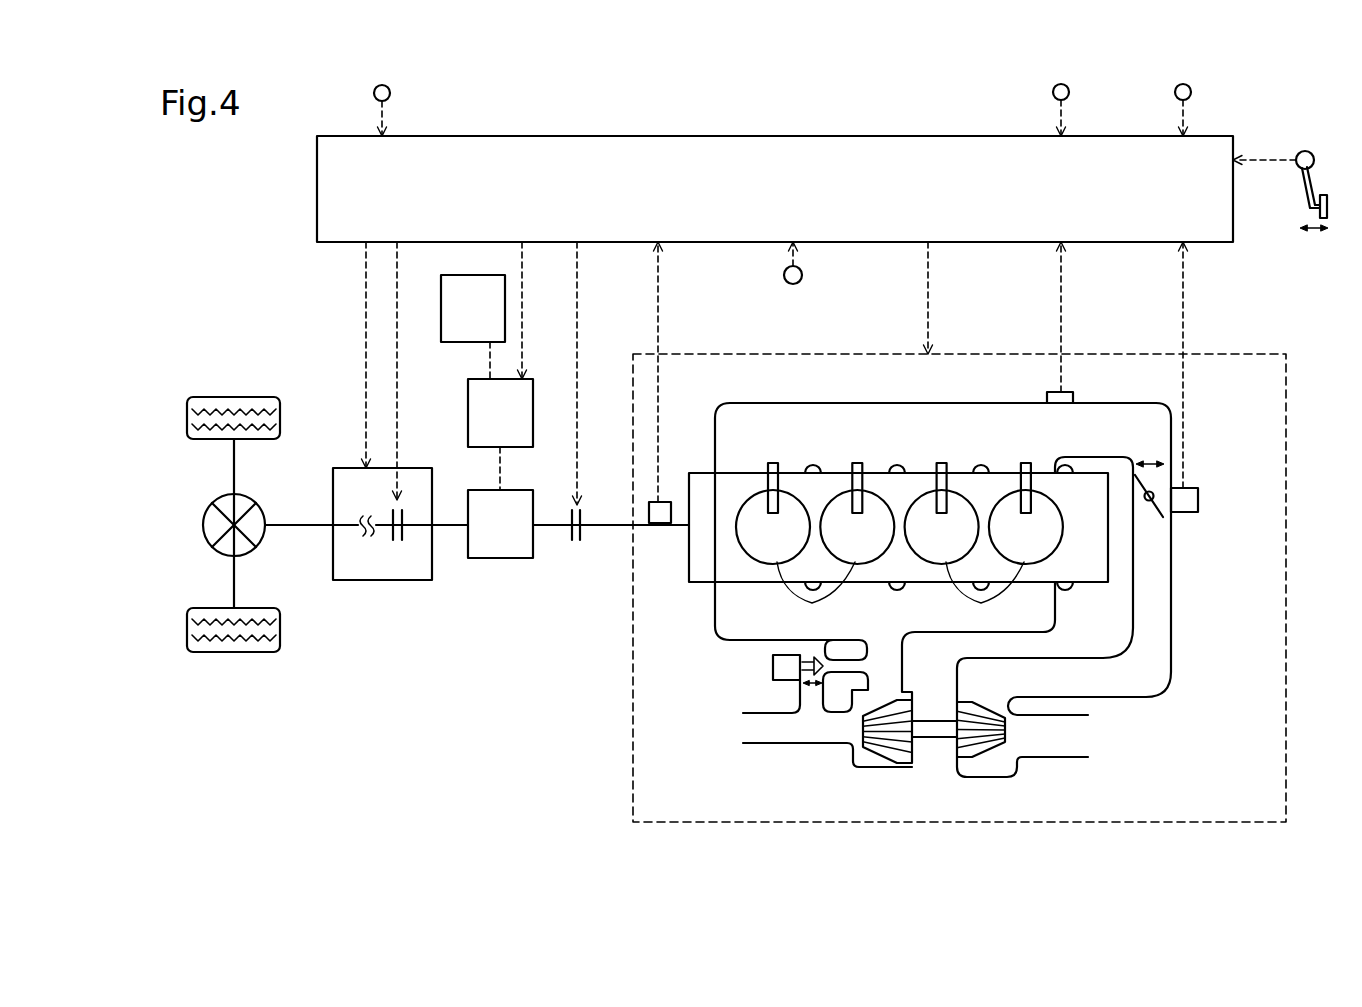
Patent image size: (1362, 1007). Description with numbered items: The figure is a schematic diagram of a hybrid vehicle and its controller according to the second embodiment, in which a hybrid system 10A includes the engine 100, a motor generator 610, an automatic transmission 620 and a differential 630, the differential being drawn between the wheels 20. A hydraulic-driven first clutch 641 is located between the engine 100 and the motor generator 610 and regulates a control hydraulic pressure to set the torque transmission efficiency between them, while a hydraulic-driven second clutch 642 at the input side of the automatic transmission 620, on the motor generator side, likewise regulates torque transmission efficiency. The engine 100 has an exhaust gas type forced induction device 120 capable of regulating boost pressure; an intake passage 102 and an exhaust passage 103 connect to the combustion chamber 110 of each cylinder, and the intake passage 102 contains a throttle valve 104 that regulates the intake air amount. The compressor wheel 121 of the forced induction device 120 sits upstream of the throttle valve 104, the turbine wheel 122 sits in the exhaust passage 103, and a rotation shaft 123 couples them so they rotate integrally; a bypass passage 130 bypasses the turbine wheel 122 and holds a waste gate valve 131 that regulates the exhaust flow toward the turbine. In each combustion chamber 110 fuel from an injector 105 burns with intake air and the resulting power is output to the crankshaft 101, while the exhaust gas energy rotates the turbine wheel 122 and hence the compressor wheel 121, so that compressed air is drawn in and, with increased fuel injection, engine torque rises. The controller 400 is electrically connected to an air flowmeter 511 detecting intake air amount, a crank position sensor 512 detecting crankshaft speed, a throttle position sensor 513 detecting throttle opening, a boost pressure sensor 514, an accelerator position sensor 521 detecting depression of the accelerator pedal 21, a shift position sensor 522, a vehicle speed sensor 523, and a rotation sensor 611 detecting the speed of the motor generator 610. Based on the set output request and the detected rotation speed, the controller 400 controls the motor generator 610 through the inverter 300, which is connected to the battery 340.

The hybrid system 10A is at (1275, 314).
The drive wheels 20 is at (280, 403).
The accelerator pedal 21 is at (1308, 200).
The engine 100 is at (1262, 354).
The crankshaft 101 is at (597, 520).
The intake passage 102 is at (1172, 621).
The exhaust passage 103 is at (766, 748).
The throttle valve 104 is at (1149, 506).
The injector 105 is at (855, 486).
The combustion chamber 110 is at (904, 547).
The forced induction device 120 is at (836, 788).
The compressor wheel 121 is at (988, 758).
The turbine wheel 122 is at (893, 768).
The rotation shaft 123 is at (937, 742).
The bypass passage 130 is at (858, 657).
The waste gate valve 131 is at (782, 680).
The inverter 300 is at (472, 379).
The battery 340 is at (472, 275).
The controller 400 is at (317, 188).
The air flowmeter 511 is at (1074, 398).
The crank position sensor 512 is at (660, 501).
The throttle position sensor 513 is at (1199, 499).
The boost pressure sensor 514 is at (793, 285).
The accelerator position sensor 521 is at (1307, 152).
The shift position sensor 522 is at (1191, 92).
The vehicle speed sensor 523 is at (1053, 92).
The motor generator 610 is at (482, 559).
The rotation sensor 611 is at (374, 92).
The automatic transmission 620 is at (378, 581).
The differential 630 is at (292, 484).
The first clutch 641 is at (570, 546).
The second clutch 642 is at (413, 497).